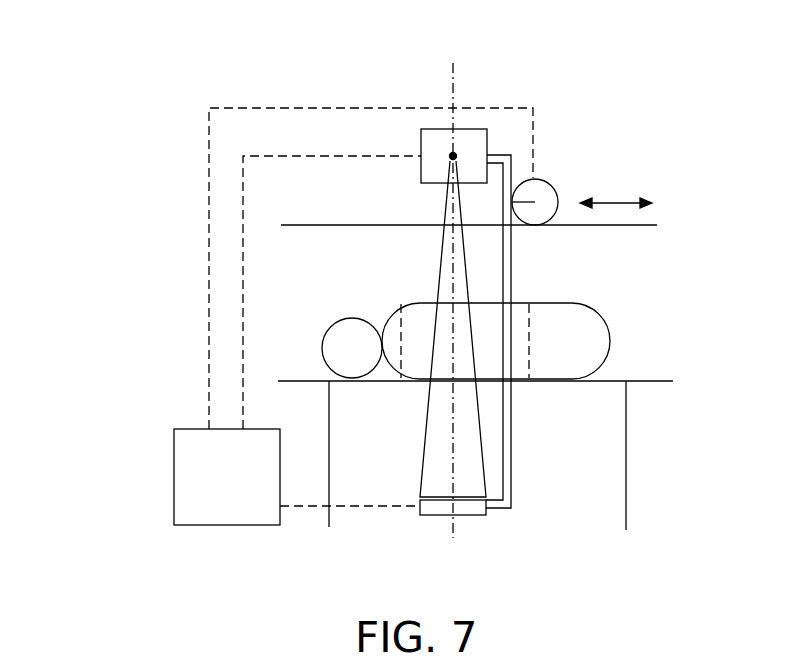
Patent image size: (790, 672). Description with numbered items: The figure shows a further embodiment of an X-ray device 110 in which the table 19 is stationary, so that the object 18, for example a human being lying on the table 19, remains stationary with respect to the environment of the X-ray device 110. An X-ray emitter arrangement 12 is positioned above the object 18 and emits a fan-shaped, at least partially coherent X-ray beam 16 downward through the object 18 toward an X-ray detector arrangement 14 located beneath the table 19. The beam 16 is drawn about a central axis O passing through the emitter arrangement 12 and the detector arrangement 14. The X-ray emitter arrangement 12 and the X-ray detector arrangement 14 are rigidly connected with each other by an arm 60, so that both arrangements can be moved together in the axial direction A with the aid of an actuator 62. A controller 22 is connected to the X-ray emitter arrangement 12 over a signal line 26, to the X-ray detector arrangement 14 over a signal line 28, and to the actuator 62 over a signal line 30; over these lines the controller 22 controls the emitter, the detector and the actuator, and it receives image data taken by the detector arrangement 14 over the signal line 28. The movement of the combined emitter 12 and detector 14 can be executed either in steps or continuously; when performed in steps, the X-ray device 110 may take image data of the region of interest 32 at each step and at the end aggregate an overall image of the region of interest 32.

The X-ray device 110 is at (152, 74).
The X-ray emitter arrangement 12 is at (428, 129).
The X-ray detector arrangement 14 is at (480, 517).
The X-ray beam 16 is at (448, 262).
The object 18 is at (596, 326).
The table 19 is at (665, 385).
The controller 22 is at (174, 456).
The signal line 26 is at (336, 156).
The signal line 28 is at (368, 508).
The signal line 30 is at (209, 261).
The region of interest 32 is at (513, 306).
The arm 60 is at (505, 152).
The actuator 62 is at (558, 187).
The optical axis O is at (467, 63).
The axial direction A is at (618, 189).